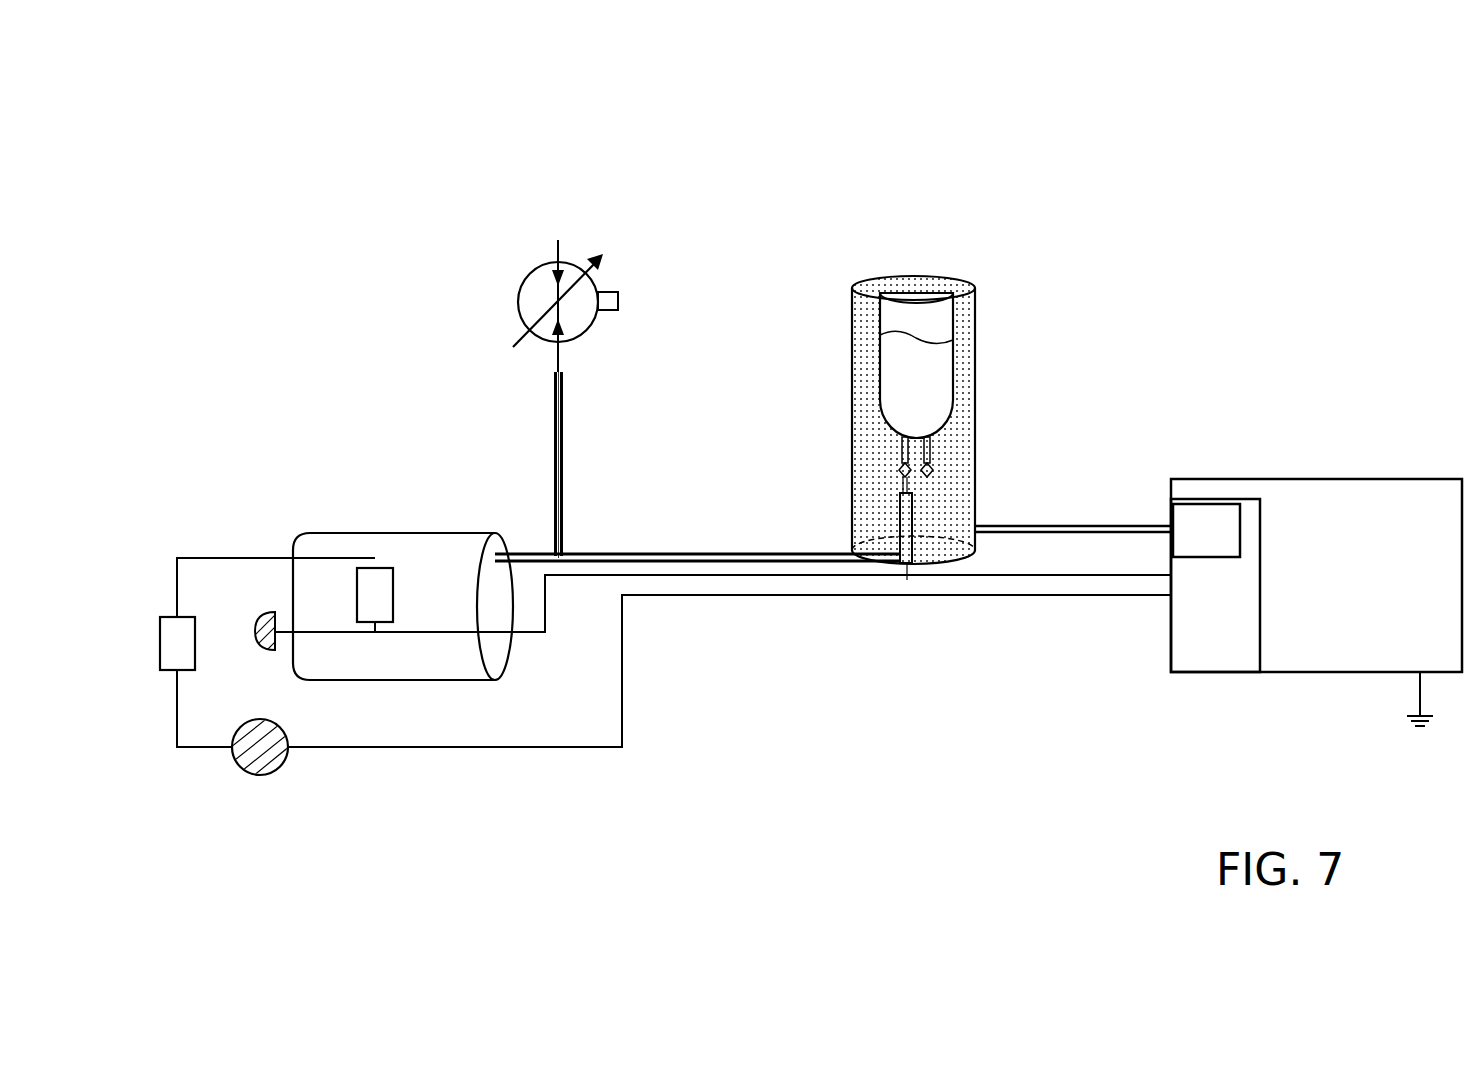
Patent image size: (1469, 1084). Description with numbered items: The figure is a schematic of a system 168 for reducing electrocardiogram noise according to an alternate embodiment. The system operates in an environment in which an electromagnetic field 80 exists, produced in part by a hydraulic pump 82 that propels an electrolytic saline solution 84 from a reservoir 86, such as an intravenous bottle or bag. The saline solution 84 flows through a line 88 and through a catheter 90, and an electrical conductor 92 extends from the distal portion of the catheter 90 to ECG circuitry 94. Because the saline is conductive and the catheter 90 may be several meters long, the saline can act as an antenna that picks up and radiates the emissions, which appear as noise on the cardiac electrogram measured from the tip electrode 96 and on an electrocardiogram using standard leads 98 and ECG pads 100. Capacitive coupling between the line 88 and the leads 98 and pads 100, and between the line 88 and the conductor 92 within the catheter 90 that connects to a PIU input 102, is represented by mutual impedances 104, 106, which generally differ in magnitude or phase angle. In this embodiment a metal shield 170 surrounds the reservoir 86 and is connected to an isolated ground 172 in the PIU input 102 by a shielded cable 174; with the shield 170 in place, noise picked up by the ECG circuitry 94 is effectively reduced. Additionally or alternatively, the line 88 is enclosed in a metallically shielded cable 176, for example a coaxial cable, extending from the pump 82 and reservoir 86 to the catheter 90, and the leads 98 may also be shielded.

The system 168 is at (387, 187).
The electromagnetic field 80 is at (992, 190).
The hydraulic pump 82 is at (518, 304).
The saline solution 84 is at (950, 366).
The reservoir 86 is at (866, 302).
The line 88 is at (563, 405).
The catheter 90 is at (402, 532).
The electrical conductor 92 is at (582, 578).
The ECG circuitry 94 is at (1388, 674).
The tip electrode 96 is at (262, 648).
The leads 98 is at (442, 750).
The ECG pads 100 is at (262, 775).
The PIU input 102 is at (1192, 498).
The mutual impedance 104 is at (396, 598).
The mutual impedance 106 is at (162, 672).
The metal shield 170 is at (851, 366).
The isolated ground 172 is at (1210, 560).
The shielded cable 174 is at (1117, 523).
The metallically shielded cable 176 is at (563, 455).